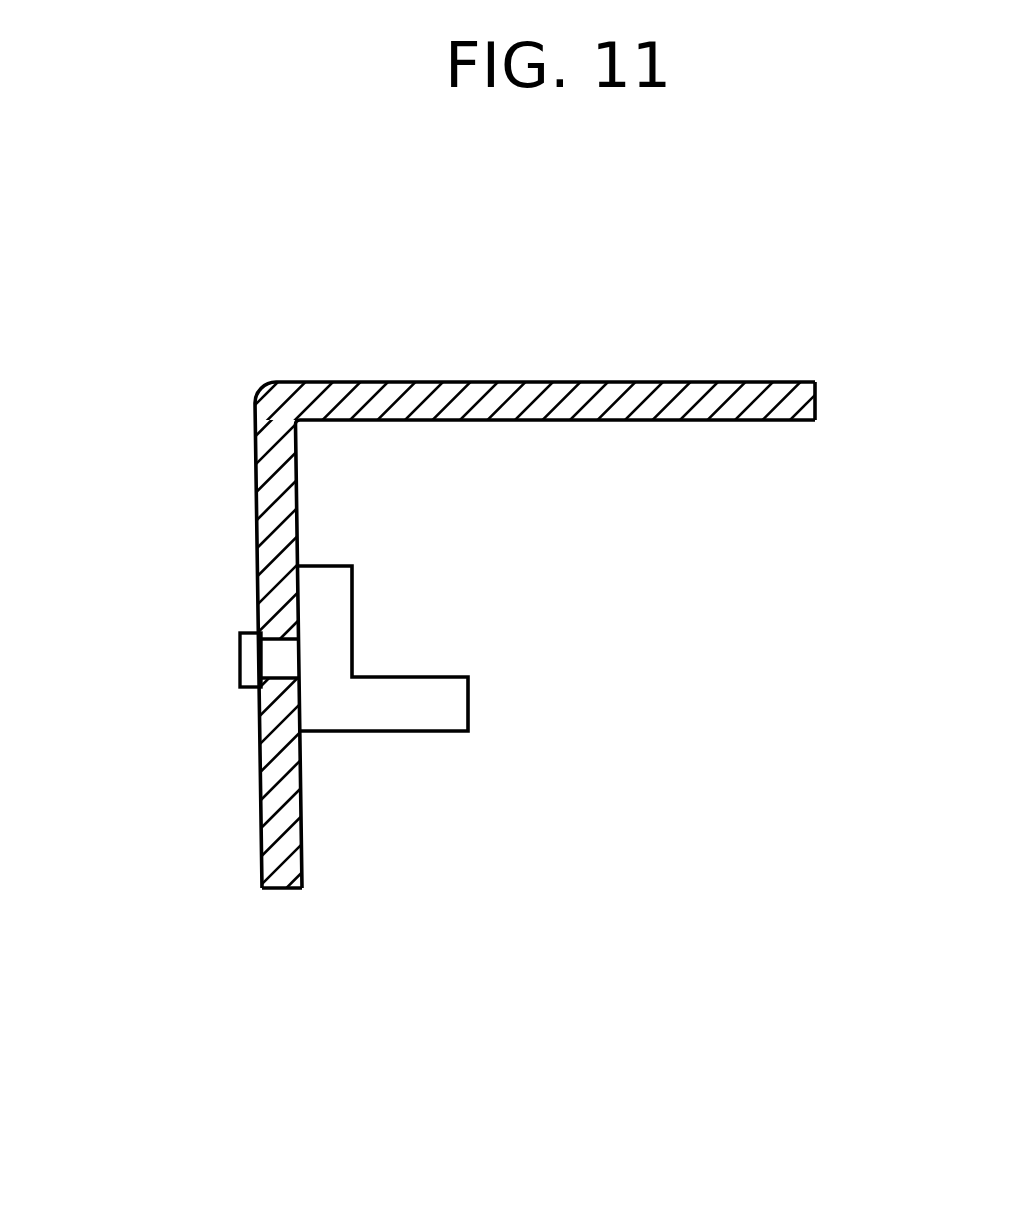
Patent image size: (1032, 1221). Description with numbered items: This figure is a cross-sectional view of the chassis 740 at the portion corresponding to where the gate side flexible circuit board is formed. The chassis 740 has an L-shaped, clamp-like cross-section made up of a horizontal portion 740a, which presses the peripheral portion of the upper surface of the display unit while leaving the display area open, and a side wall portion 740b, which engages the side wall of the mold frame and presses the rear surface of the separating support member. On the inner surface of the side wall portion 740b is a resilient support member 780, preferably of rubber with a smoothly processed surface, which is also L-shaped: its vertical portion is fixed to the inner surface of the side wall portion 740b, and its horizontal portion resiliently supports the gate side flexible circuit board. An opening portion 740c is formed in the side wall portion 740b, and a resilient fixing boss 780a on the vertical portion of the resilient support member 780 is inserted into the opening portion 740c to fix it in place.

The chassis 740 is at (655, 397).
The horizontal portion 740a is at (817, 417).
The side wall portion 740b is at (280, 890).
The opening portion 740c is at (258, 627).
The resilient support member 780 is at (393, 717).
The resilient fixing boss 780a is at (242, 658).